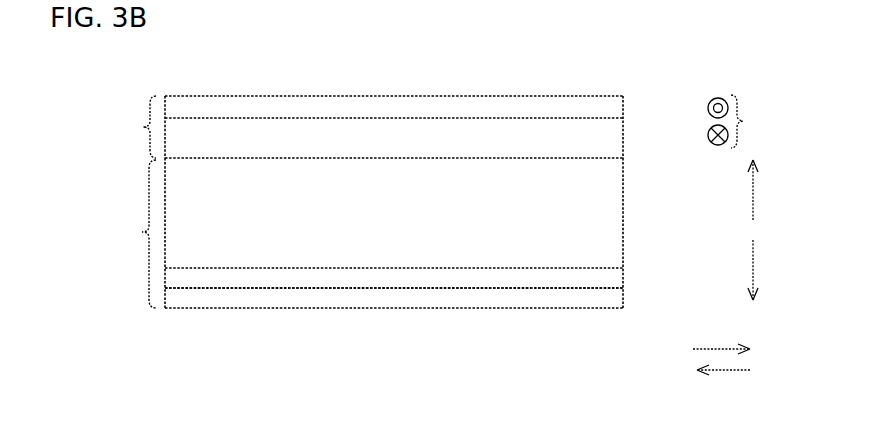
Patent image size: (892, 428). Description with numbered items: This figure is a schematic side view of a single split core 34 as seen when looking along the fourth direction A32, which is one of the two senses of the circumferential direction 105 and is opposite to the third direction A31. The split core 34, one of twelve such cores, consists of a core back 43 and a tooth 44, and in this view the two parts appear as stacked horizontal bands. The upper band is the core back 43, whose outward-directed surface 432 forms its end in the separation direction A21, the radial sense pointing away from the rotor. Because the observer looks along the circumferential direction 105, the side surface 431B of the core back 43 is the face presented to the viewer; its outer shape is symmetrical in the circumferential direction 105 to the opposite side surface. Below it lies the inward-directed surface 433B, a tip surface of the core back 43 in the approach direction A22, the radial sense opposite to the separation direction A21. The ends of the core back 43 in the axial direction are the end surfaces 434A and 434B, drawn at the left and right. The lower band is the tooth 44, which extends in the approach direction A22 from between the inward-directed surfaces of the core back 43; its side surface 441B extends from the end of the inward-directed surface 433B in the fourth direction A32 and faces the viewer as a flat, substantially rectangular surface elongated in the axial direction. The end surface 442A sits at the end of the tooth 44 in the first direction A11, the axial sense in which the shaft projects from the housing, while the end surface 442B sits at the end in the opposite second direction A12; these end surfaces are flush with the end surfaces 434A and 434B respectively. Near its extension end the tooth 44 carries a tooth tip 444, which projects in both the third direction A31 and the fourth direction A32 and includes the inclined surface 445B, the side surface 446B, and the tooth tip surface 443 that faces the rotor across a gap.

The split core 34 is at (580, 50).
The core back 43 is at (134, 127).
The tooth 44 is at (134, 234).
The outward-directed surface 432 is at (524, 106).
The side surface 431B is at (424, 140).
The inward-directed surface 433B is at (292, 158).
The end surface 434A is at (163, 97).
The end surface 434B is at (625, 137).
The side surface 441B is at (408, 226).
The end surface 442A is at (163, 300).
The end surface 442B is at (626, 228).
The tooth tip surface 443 is at (420, 309).
The tooth tip 444 is at (630, 293).
The inclined surface 445B is at (288, 278).
The side surface 446B is at (576, 308).
The circumferential direction 105 is at (725, 121).
The third direction A31 is at (699, 108).
The fourth direction A32 is at (699, 135).
The separation direction A21 is at (754, 196).
The approach direction A22 is at (754, 260).
The second direction A12 is at (718, 348).
The first direction A11 is at (715, 372).